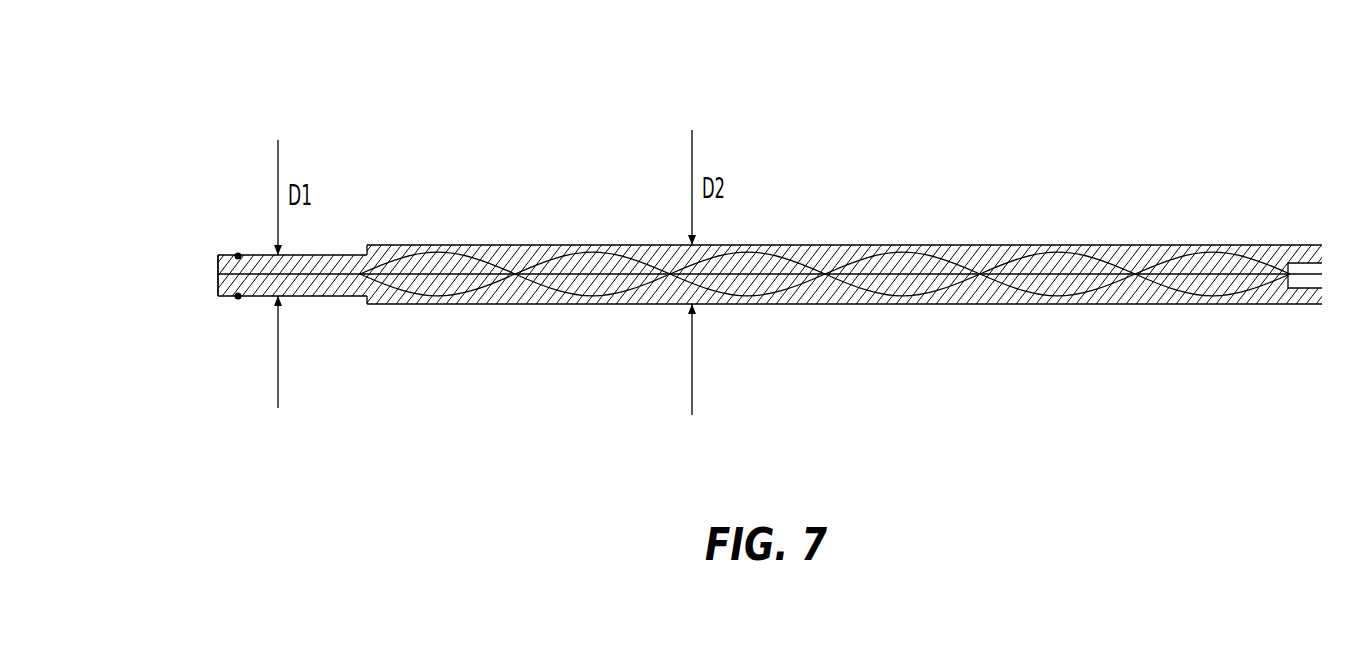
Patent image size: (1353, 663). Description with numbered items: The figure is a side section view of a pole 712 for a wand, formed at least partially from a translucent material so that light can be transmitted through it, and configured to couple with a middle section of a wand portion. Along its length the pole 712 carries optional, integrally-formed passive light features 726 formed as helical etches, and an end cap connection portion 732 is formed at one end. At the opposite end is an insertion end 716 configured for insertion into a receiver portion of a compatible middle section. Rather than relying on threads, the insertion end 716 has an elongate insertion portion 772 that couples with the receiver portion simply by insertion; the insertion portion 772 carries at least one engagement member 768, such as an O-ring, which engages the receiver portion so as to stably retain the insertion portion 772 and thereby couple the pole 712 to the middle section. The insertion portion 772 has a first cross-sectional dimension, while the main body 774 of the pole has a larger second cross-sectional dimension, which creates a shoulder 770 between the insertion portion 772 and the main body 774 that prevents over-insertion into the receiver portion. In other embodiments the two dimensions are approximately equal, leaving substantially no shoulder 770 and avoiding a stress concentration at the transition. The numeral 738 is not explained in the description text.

The pole 712 is at (734, 253).
The insertion end 716 is at (365, 403).
The passive light features 726 is at (430, 305).
The end cap connection portion 732 is at (1305, 326).
The outer layer 738 is at (575, 245).
The engagement member 768 is at (238, 256).
The shoulder 770 is at (362, 304).
The insertion portion 772 is at (218, 273).
The main body 774 is at (768, 272).